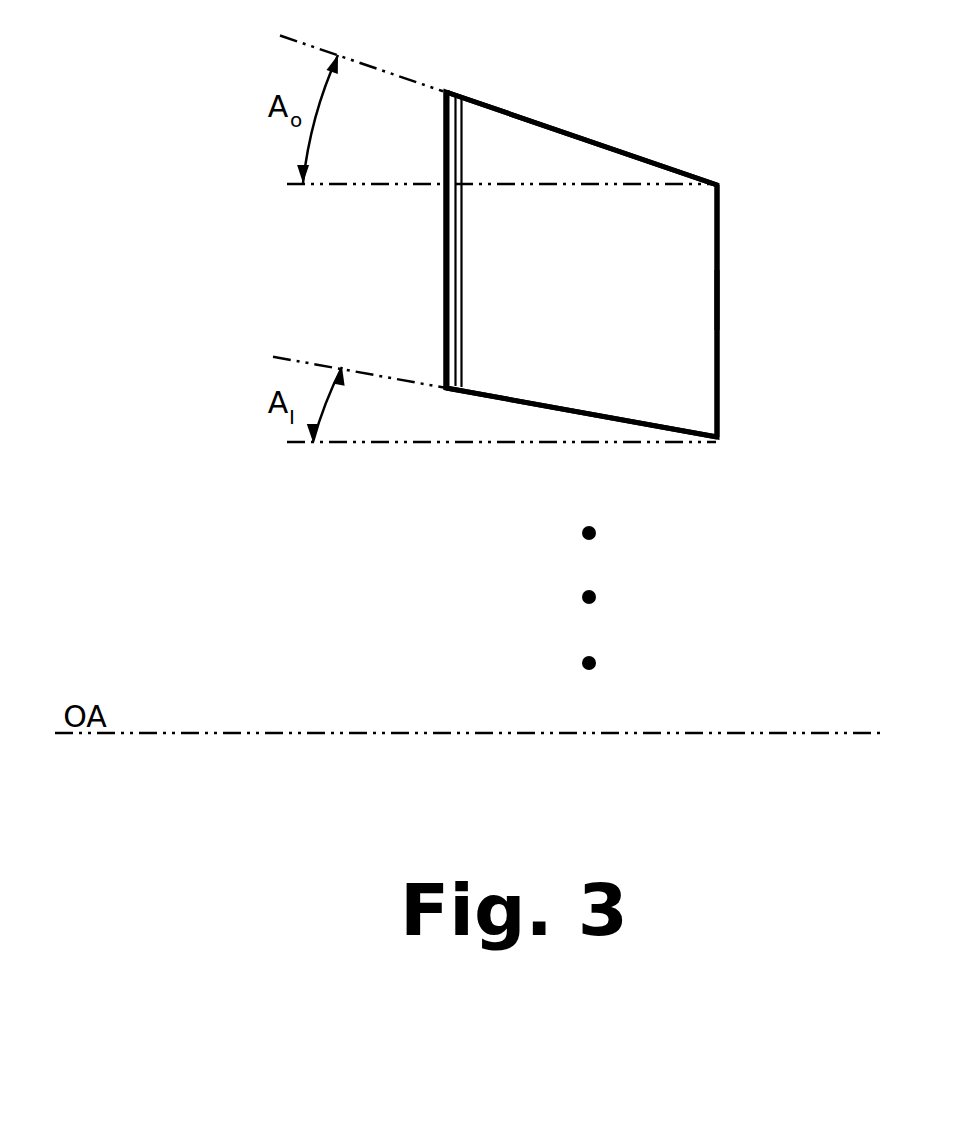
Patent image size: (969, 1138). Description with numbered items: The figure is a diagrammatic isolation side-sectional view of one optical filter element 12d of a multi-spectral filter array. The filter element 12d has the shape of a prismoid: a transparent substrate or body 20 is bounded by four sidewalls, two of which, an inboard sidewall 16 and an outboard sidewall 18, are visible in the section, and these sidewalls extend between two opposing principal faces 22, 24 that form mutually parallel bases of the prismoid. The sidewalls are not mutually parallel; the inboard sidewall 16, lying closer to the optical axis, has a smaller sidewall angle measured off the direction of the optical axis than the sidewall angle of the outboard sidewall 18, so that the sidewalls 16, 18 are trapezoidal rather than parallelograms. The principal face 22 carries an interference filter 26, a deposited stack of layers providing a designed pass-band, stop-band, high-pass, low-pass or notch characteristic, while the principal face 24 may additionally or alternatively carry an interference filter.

The filter element 12d is at (545, 293).
The inboard sidewall 16 is at (563, 412).
The outboard sidewall 18 is at (583, 135).
The transparent substrate or body 20 is at (652, 257).
The principal face 22 is at (438, 305).
The principal face 24 is at (728, 306).
The interference filter 26 is at (443, 230).